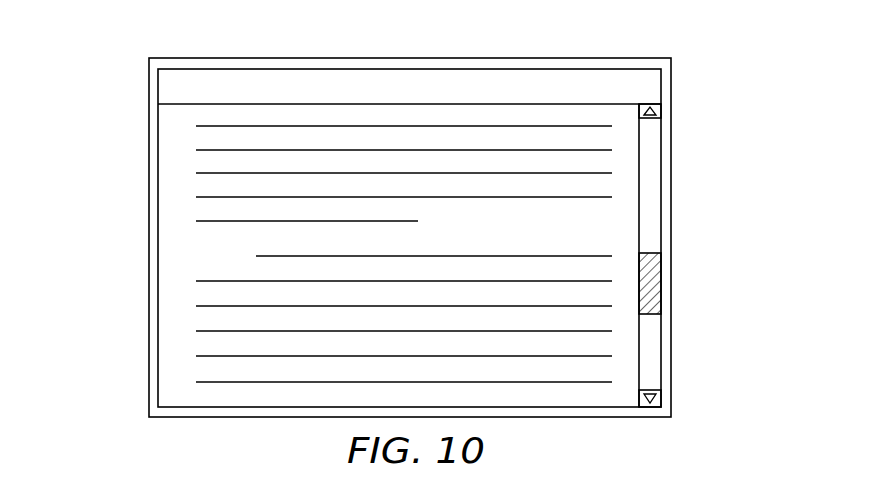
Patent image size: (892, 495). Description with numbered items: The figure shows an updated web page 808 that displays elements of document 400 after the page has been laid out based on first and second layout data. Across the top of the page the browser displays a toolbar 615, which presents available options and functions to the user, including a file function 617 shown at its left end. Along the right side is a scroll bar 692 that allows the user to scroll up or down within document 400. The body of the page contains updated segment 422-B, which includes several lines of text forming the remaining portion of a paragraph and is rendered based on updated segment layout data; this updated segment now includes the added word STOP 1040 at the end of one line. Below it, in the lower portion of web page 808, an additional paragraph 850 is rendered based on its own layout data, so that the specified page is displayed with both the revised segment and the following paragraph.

The web page 808 is at (523, 58).
The toolbar 615 is at (363, 88).
The File menu 617 is at (175, 83).
The document 400 is at (198, 256).
The segment 422-B is at (680, 123).
The added word STOP 1040 is at (495, 219).
The scroll bar 692 is at (648, 235).
The additional paragraph 850 is at (680, 253).